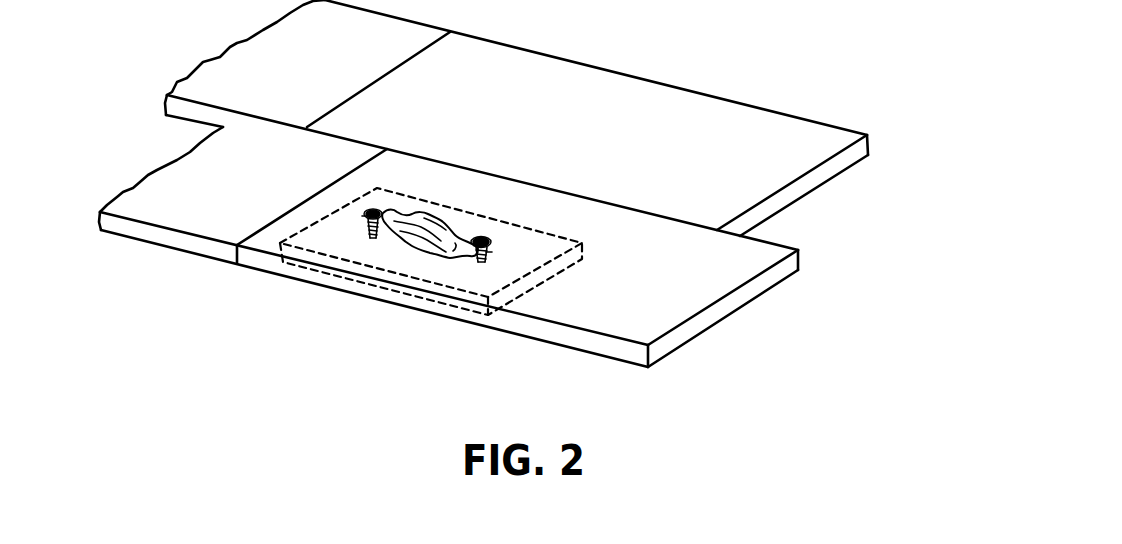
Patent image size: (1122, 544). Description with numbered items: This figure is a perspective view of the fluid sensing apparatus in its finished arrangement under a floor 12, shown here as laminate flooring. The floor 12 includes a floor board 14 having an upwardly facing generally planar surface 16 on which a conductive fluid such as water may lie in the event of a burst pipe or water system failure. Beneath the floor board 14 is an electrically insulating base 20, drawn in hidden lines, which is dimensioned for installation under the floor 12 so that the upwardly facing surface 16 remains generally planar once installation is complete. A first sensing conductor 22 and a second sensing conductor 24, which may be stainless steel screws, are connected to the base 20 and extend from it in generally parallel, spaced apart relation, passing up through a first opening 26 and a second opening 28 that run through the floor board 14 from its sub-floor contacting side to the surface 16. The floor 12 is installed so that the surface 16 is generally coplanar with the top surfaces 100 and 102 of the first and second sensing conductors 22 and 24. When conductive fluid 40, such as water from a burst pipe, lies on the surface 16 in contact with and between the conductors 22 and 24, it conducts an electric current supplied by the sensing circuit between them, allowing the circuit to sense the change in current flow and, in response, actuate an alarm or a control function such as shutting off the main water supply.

The floor 12 is at (741, 43).
The floor board 14 is at (662, 323).
The upwardly facing generally planar surface 16 is at (689, 280).
The electrically insulating base 20 is at (426, 307).
The first sensing conductor 22 is at (372, 211).
The second sensing conductor 24 is at (480, 237).
The first opening 26 is at (382, 213).
The second opening 28 is at (494, 242).
The conductive fluid 40 is at (441, 235).
The top surface of first sensing conductor 100 is at (366, 216).
The top surface of second sensing conductor 102 is at (492, 252).